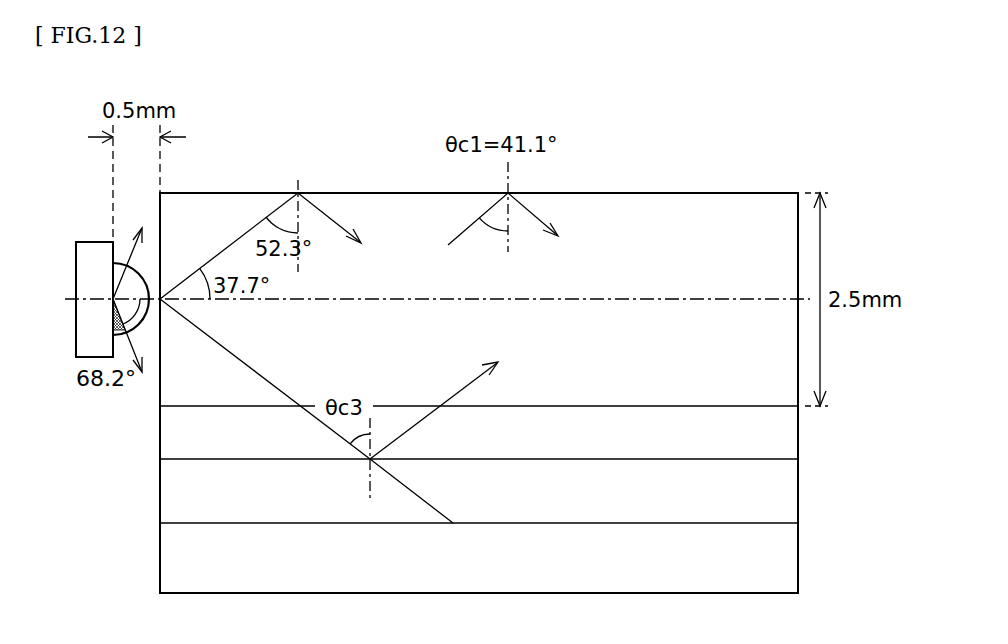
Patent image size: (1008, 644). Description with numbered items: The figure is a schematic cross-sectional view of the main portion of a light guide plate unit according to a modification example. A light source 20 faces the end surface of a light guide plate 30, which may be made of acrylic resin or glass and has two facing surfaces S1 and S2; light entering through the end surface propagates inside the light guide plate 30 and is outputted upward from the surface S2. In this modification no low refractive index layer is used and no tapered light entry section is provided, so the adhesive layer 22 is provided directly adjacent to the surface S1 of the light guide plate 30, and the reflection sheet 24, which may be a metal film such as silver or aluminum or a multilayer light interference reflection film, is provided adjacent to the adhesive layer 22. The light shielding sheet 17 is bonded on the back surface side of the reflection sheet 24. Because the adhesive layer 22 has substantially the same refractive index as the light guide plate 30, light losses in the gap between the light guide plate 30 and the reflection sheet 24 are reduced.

The light source 20 is at (97, 224).
The light guide plate 30 is at (760, 173).
The adhesive layer 22 is at (795, 435).
The reflection sheet 24 is at (795, 488).
The light shielding sheet 17 is at (795, 570).
The surface S1 is at (667, 406).
The surface S2 is at (667, 193).